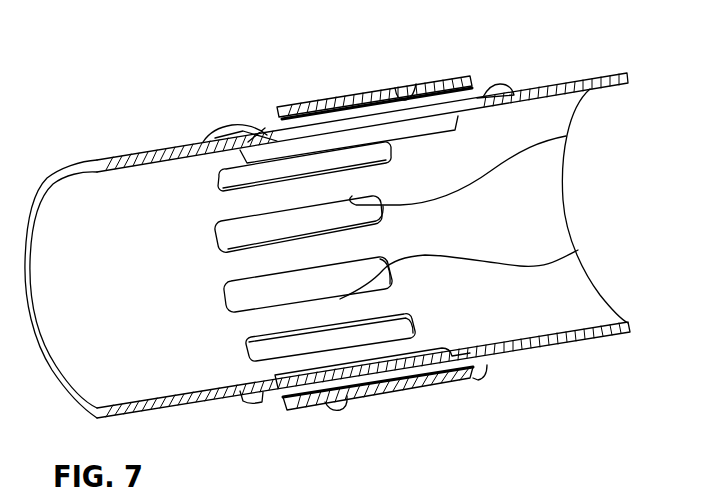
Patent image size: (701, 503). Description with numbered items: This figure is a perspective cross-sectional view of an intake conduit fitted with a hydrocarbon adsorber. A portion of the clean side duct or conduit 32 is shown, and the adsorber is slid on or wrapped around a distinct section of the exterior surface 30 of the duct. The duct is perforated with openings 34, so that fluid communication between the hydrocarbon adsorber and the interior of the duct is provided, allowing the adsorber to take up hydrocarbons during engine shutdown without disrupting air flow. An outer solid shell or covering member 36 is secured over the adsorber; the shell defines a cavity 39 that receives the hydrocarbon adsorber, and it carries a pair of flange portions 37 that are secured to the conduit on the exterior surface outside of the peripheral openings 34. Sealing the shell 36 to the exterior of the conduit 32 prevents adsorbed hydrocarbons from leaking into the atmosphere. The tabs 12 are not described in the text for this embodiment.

The tabs 12 is at (333, 113).
The exterior surface 30 is at (589, 78).
The clean side duct or conduit 32 is at (562, 333).
The openings 34 is at (566, 136).
The outer solid shell or covering member 36 is at (468, 81).
The flange portions 37 is at (224, 128).
The cavity 39 is at (405, 99).